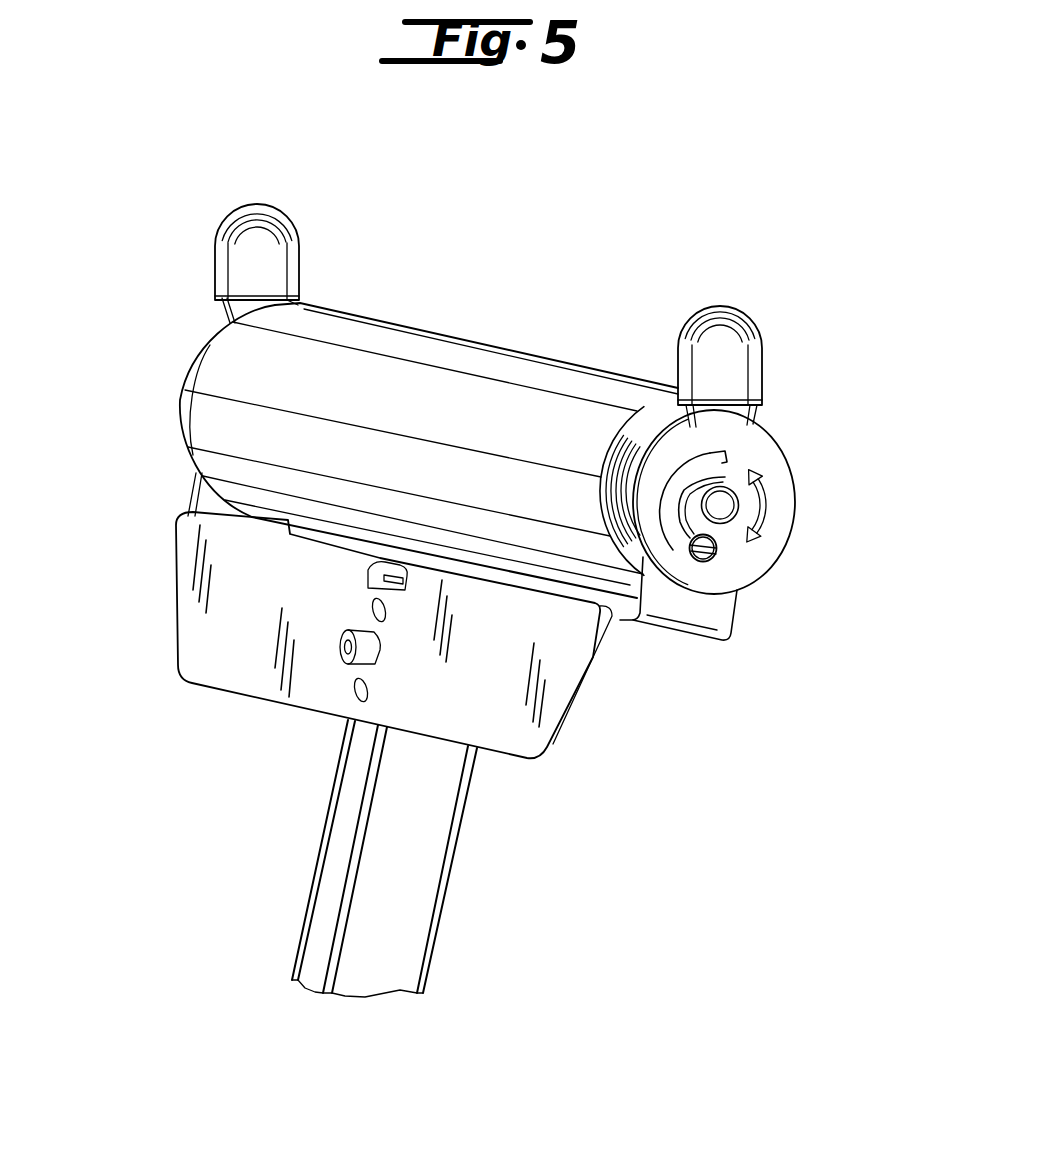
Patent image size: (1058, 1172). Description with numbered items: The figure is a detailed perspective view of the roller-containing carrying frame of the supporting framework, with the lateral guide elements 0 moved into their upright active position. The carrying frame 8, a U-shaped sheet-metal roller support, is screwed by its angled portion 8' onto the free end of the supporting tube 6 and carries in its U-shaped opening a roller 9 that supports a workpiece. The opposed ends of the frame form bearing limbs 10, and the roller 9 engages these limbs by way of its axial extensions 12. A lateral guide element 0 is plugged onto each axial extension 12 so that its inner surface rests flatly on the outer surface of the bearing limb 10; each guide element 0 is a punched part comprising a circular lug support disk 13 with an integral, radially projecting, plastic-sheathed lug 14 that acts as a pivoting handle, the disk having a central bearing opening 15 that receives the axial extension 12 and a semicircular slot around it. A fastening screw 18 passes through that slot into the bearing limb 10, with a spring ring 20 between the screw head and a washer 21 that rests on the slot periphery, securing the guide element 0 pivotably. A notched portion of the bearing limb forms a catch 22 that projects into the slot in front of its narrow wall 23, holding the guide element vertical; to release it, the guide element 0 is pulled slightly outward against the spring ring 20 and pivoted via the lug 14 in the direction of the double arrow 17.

The lateral guide element 0 is at (248, 215).
The supporting tube 6 is at (337, 872).
The carrying frame 8 is at (335, 635).
The angled portion 8' is at (243, 637).
The roller 9 is at (425, 383).
The bearing limb 10 is at (208, 498).
The axial extension 12 is at (722, 505).
The lug support disk 13 is at (662, 462).
The lug 14 is at (243, 270).
The central bearing opening 15 is at (725, 477).
The double arrow 17 is at (765, 532).
The fastening screw 18 is at (717, 548).
The spring ring 20 is at (700, 555).
The washer 21 is at (693, 540).
The catch 22 is at (723, 451).
The narrow wall 23 is at (727, 462).